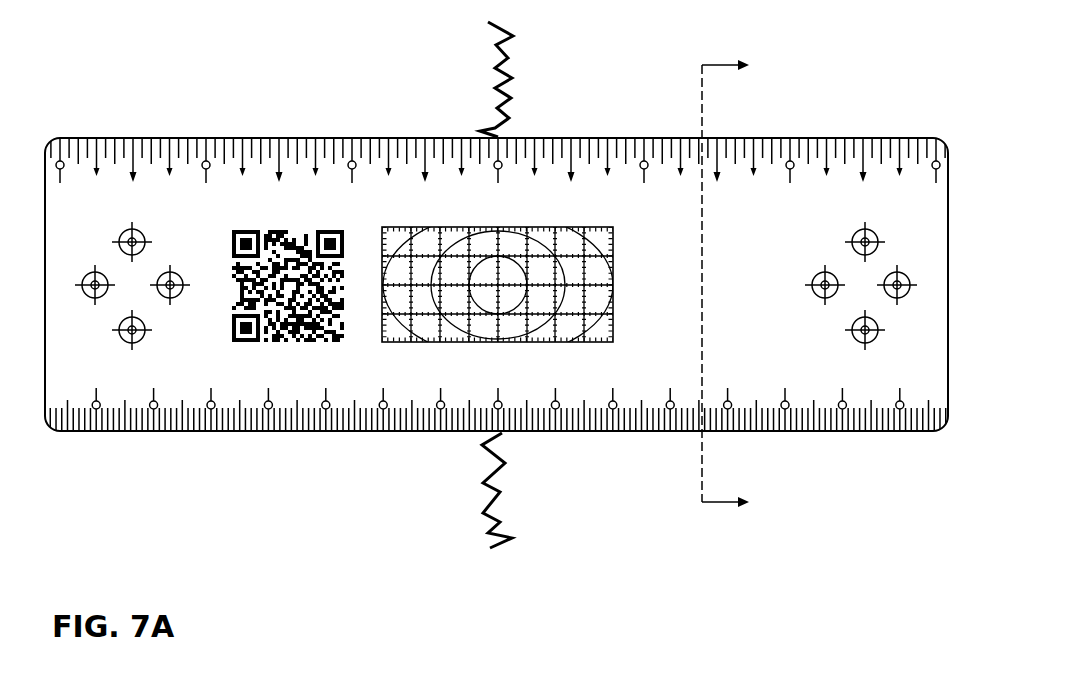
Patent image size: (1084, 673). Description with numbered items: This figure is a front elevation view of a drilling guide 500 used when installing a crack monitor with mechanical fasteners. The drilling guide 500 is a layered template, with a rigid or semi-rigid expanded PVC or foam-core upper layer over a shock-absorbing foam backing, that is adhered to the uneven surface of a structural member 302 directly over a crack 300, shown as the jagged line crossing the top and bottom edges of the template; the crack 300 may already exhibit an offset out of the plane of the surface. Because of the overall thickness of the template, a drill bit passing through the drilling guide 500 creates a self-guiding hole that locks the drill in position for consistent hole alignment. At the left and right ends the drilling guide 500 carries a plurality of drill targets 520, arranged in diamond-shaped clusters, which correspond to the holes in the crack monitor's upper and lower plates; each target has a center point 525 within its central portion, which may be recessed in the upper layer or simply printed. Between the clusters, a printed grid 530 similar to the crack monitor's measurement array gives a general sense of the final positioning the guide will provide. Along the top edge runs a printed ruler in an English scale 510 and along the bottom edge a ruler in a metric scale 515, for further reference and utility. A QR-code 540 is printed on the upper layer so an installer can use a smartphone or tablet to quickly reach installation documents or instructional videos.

The crack 300 is at (493, 74).
The structural member 302 is at (517, 596).
The drilling guide 500 is at (89, 434).
The English scale ruler 510 is at (200, 161).
The metric scale ruler 515 is at (830, 431).
The drill targets 520 is at (146, 340).
The center point 525 is at (866, 238).
The printed grid 530 is at (379, 337).
The QR-code 540 is at (263, 225).